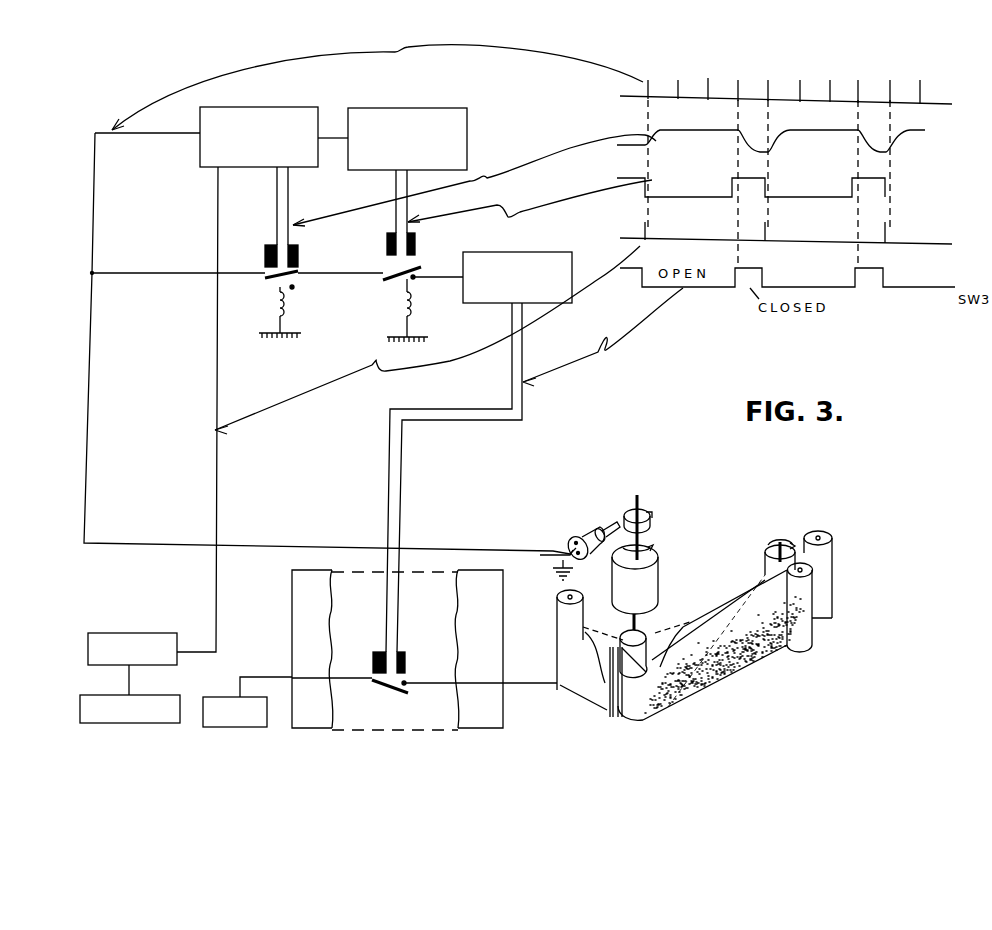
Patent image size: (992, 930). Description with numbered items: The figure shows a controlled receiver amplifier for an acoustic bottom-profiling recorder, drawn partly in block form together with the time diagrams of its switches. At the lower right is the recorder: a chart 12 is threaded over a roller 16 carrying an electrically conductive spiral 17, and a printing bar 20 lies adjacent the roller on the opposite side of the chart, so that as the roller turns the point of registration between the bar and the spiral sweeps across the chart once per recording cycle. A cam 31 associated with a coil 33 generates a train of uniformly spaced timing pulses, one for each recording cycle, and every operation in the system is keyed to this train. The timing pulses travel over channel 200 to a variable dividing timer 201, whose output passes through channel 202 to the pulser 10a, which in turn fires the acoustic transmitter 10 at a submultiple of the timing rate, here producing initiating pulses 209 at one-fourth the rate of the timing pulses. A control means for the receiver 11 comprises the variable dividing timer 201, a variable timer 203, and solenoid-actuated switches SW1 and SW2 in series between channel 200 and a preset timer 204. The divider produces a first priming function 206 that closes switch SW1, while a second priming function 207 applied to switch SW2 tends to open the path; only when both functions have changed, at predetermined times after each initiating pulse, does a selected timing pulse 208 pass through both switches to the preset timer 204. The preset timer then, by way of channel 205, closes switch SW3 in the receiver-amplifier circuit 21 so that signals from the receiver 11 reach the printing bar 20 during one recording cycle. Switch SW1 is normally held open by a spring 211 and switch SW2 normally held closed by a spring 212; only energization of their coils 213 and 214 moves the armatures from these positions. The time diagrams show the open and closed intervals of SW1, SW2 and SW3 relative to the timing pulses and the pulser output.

The acoustic transmitter 10 is at (81, 698).
The pulser 10a is at (132, 626).
The receiver 11 is at (226, 697).
The recording strip or chart 12 is at (737, 661).
The roller 16 is at (645, 633).
The electrically conductive spiral 17 is at (648, 663).
The printing bar 20 is at (610, 716).
The receiver-amplifier circuit 21 is at (294, 603).
The cam 31 is at (645, 512).
The coil 33 is at (580, 546).
The channel 200 is at (142, 543).
The variable dividing timer 201 is at (200, 154).
The channel 202 is at (217, 360).
The variable timer 203 is at (423, 99).
The preset timer 204 is at (519, 246).
The channel 205 is at (401, 461).
The first control or priming function 206 is at (656, 137).
The second control or priming function 207 is at (700, 199).
The timing pulse 208 is at (740, 82).
The initiating pulses 209 is at (646, 228).
The spring 211 is at (287, 303).
The spring 212 is at (410, 304).
The coil 213 is at (265, 252).
The coil 214 is at (387, 256).
The solenoid-actuated switch SW1 is at (298, 250).
The solenoid-actuated switch SW2 is at (415, 240).
The switch SW3 is at (400, 656).